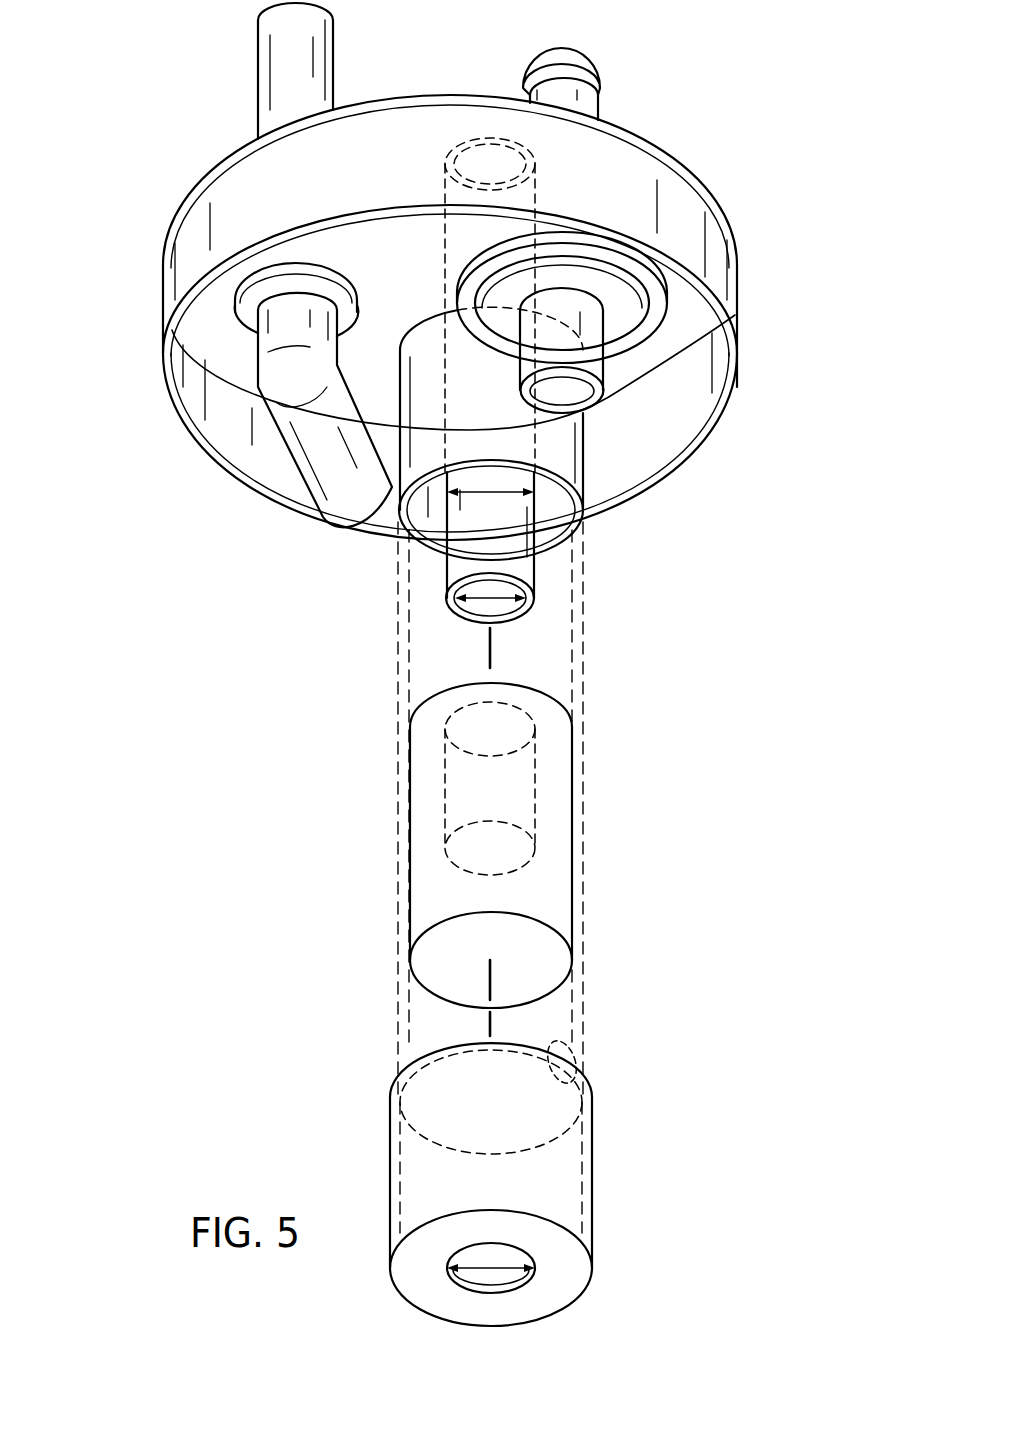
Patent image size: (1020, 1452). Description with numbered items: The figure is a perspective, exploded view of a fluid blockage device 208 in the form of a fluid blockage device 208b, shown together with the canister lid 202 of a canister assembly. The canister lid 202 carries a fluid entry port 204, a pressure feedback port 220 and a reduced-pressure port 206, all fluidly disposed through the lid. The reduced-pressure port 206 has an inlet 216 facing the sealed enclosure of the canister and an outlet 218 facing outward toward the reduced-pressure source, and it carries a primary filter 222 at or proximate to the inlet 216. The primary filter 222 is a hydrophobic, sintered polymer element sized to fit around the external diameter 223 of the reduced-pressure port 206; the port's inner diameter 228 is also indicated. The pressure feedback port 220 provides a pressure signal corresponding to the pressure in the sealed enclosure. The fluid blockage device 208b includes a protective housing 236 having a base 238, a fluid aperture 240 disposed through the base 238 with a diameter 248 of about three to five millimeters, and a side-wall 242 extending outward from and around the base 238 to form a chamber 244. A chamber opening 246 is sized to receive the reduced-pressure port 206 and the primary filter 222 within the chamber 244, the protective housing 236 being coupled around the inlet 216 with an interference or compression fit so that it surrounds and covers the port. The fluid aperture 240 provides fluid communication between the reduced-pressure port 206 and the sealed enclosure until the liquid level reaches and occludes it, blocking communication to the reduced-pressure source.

The canister lid 202 is at (134, 52).
The fluid entry port 204 is at (257, 77).
The reduced-pressure port 206 is at (548, 532).
The fluid blockage device 208 is at (554, 1205).
The fluid blockage device 208b is at (554, 1205).
The inlet 216 is at (532, 610).
The outlet 218 is at (490, 140).
The pressure feedback port 220 is at (583, 50).
The primary filter 222 is at (573, 823).
The external diameter 223 is at (494, 495).
The tube inner diameter 228 is at (483, 601).
The protective housing 236 is at (554, 1205).
The base 238 is at (578, 1277).
The fluid aperture 240 is at (480, 1278).
The side-wall 242 is at (389, 1152).
The chamber 244 is at (512, 1198).
The chamber opening 246 is at (578, 1053).
The diameter 248 is at (500, 1278).